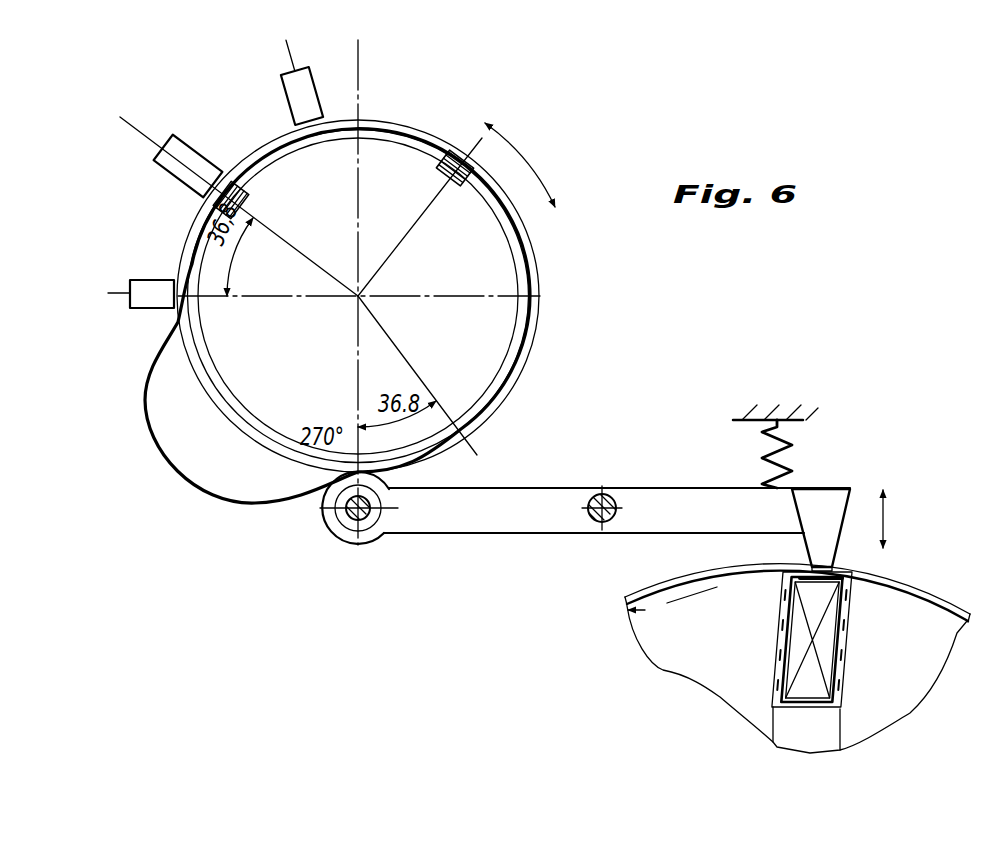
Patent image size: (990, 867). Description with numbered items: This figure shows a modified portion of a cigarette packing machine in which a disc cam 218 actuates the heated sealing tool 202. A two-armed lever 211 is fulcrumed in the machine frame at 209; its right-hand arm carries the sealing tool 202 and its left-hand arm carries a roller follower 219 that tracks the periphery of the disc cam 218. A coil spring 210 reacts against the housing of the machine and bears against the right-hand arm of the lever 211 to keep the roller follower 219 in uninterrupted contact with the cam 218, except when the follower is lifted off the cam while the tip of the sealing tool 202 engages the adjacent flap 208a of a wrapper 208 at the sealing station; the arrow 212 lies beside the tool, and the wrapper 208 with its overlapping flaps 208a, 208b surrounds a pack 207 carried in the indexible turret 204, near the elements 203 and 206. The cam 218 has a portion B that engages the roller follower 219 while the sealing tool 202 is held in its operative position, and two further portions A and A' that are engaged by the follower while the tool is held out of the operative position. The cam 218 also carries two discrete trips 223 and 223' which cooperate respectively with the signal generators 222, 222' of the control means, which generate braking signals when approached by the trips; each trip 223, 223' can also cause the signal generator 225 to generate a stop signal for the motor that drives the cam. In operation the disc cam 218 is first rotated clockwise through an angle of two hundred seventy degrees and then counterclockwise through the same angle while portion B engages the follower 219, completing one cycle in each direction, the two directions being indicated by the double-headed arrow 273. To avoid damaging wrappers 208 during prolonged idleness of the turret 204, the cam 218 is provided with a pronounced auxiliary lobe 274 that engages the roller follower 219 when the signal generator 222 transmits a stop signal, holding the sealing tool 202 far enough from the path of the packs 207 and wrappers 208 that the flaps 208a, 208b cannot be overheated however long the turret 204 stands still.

The disc cam 218 is at (390, 153).
The auxiliary lobe 274 is at (203, 478).
The double-headed arrow 273 is at (525, 161).
The trip 223 is at (459, 207).
The trip 223' is at (274, 196).
The signal generator 225 is at (178, 155).
The signal generator 222' is at (333, 76).
The signal generator 222 is at (128, 324).
The roller follower 219 is at (360, 545).
The two-armed lever 211 is at (680, 490).
The fulcrum 209 is at (608, 496).
The coil spring 210 is at (792, 445).
The sealing tool 202 is at (830, 502).
The movement direction arrow 212 is at (886, 518).
The flap 208a is at (810, 572).
The flap 208b is at (814, 578).
The band / rim 203 is at (665, 601).
The turret 204 is at (902, 596).
The sensor housing 206 is at (780, 647).
The wrapper 208 is at (810, 693).
The pack 207 is at (773, 740).
The cam portion A is at (469, 447).
The cam portion A' is at (159, 244).
The cam portion B is at (532, 319).